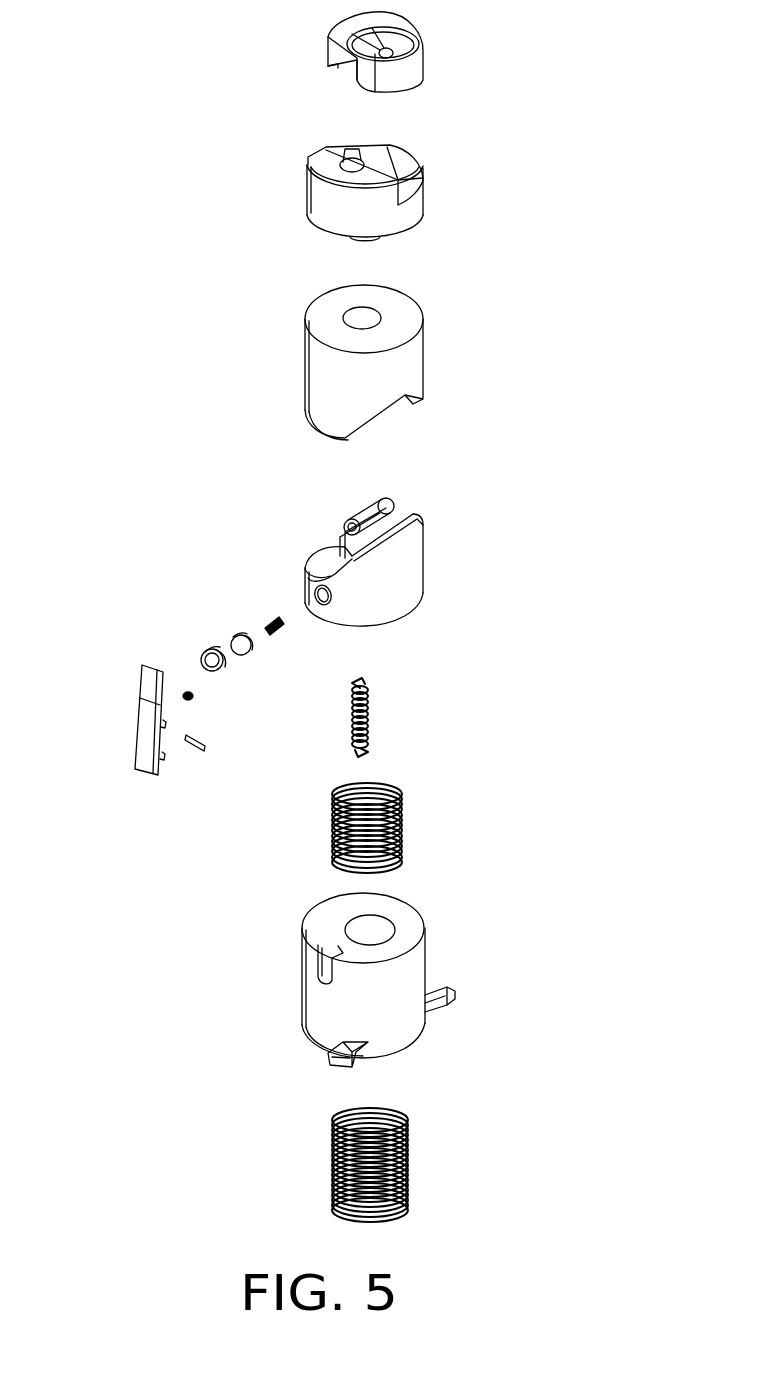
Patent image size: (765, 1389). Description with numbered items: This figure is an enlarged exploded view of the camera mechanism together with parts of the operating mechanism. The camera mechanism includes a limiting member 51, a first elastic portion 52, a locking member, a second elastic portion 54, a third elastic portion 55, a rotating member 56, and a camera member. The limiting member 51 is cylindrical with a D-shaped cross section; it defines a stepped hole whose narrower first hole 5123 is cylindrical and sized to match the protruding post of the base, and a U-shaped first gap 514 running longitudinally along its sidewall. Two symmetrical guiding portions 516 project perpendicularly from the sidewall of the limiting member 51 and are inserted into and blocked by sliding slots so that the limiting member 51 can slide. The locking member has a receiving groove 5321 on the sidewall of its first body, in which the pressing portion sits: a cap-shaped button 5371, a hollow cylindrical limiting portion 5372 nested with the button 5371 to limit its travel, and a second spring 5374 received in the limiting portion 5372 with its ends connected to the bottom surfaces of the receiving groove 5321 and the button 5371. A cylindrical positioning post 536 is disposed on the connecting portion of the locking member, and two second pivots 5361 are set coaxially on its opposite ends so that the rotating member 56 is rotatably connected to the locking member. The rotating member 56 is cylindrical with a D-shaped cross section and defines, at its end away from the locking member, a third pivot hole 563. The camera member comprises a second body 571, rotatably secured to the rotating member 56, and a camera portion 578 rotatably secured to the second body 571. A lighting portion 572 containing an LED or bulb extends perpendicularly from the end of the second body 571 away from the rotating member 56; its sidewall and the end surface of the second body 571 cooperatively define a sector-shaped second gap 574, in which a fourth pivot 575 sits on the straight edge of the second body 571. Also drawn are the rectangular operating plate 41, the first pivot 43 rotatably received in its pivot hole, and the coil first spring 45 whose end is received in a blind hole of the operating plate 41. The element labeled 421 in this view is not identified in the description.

The camera portion 578 is at (412, 70).
The second body 571 is at (372, 167).
The lighting portion 572 is at (322, 159).
The second gap 574 is at (413, 168).
The fourth pivot 575 is at (350, 150).
The rotating member 56 is at (414, 354).
The third pivot hole 563 is at (368, 318).
The seat 421 is at (363, 531).
The positioning post 536 is at (381, 508).
The second pivots 5361 is at (348, 522).
The receiving groove 5321 is at (318, 572).
The second spring 5374 is at (272, 618).
The button 5371 is at (215, 648).
The limiting portion 5372 is at (253, 652).
The first spring 45 is at (192, 700).
The first pivot 43 is at (192, 752).
The operating plate 41 is at (145, 733).
The third elastic portion 55 is at (376, 716).
The second elastic portion 54 is at (405, 832).
The limiting member 51 is at (382, 980).
The first hole 5123 is at (375, 932).
The first gap 514 is at (327, 967).
The guiding portions 516 is at (440, 990).
The first elastic portion 52 is at (410, 1163).